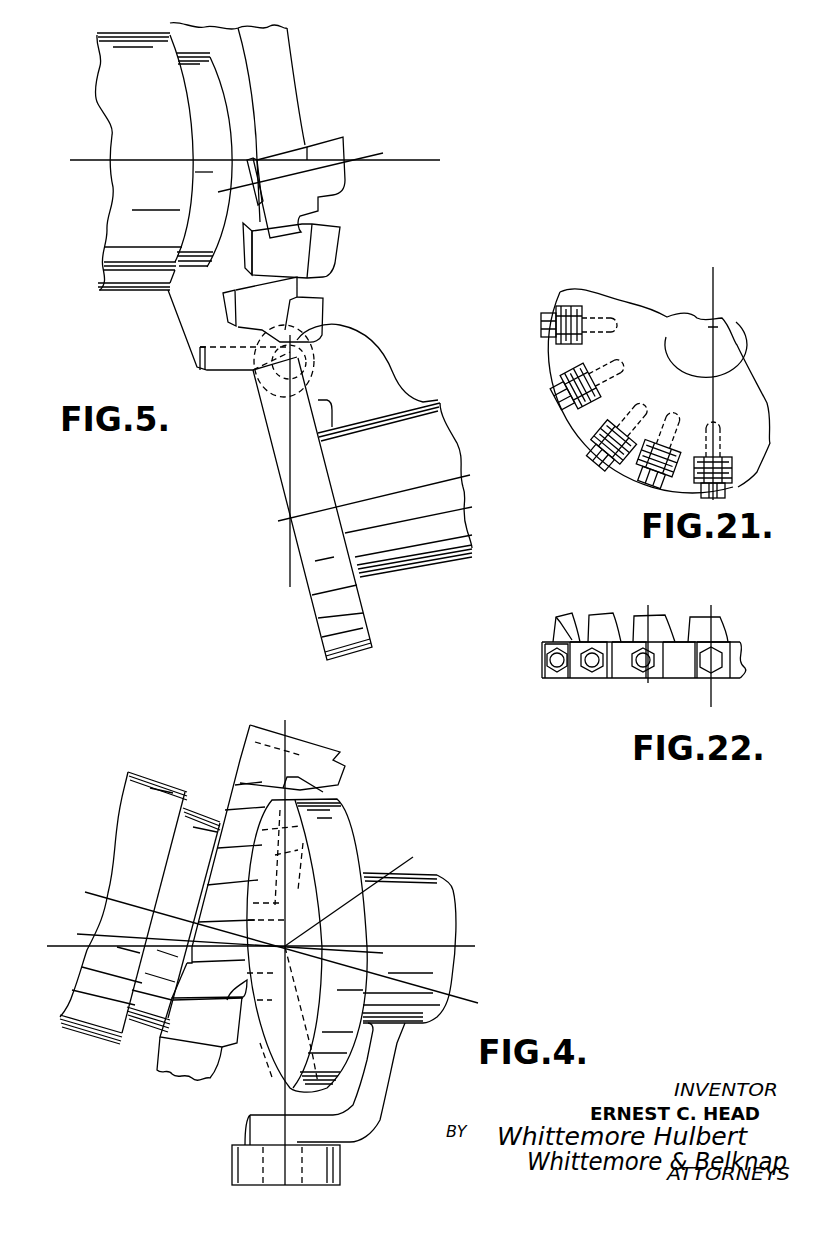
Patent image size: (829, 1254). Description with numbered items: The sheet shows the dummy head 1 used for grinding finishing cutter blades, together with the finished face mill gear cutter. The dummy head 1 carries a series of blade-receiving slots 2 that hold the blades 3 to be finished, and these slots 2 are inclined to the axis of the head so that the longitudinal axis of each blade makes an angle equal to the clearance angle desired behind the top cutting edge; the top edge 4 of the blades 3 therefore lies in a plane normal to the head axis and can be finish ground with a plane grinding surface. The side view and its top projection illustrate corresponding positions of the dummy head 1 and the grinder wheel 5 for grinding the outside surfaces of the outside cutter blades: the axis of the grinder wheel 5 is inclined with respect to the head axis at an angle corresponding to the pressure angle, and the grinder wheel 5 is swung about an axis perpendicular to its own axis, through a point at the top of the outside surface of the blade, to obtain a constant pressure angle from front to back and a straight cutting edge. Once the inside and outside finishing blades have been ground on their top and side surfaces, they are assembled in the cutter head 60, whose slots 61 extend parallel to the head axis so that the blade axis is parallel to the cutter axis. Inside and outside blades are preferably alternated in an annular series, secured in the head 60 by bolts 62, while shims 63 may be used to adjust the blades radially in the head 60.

In FIG. 5, the dummy head 1 is at (190, 340).
In FIG. 4, the dummy head 1 is at (232, 825).
In FIG. 5, the blade-receiving slots 2 is at (235, 265).
In FIG. 4, the blade-receiving slots 2 is at (168, 1032).
In FIG. 5, the blades 3 is at (287, 247).
In FIG. 4, the blades 3 is at (243, 1037).
In FIG. 5, the top edge 4 is at (340, 255).
In FIG. 4, the top edge 4 is at (291, 1065).
In FIG. 5, the grinder wheel 5 is at (277, 430).
In FIG. 4, the grinder wheel 5 is at (340, 828).
In FIG. 21, the cutter head 60 is at (635, 318).
In FIG. 22, the cutter head 60 is at (740, 665).
In FIG. 22, the slots 61 is at (692, 676).
In FIG. 21, the bolts 62 is at (605, 450).
In FIG. 22, the bolts 62 is at (586, 668).
In FIG. 21, the shims 63 is at (723, 462).